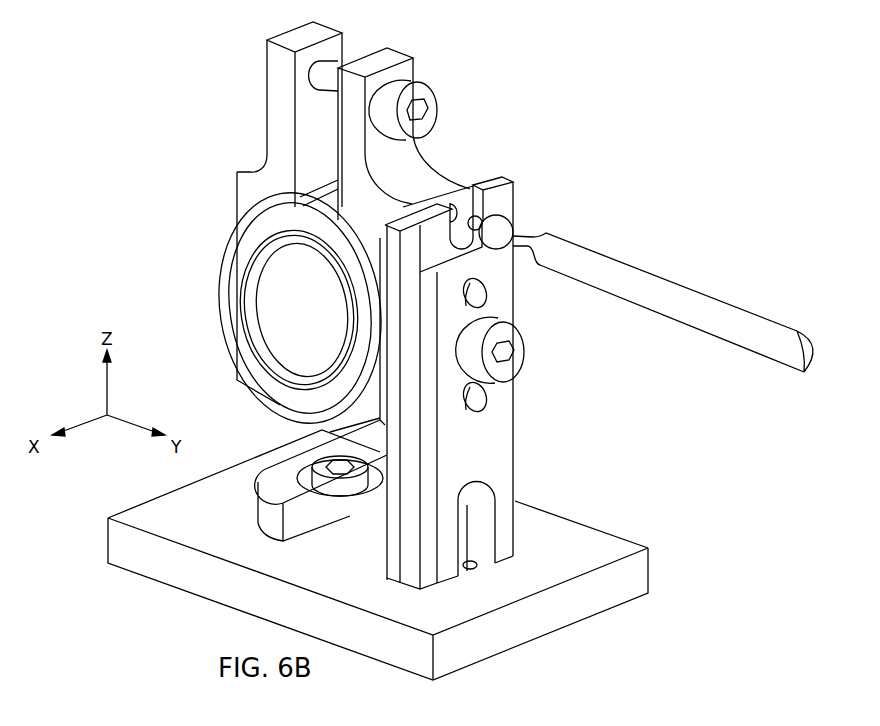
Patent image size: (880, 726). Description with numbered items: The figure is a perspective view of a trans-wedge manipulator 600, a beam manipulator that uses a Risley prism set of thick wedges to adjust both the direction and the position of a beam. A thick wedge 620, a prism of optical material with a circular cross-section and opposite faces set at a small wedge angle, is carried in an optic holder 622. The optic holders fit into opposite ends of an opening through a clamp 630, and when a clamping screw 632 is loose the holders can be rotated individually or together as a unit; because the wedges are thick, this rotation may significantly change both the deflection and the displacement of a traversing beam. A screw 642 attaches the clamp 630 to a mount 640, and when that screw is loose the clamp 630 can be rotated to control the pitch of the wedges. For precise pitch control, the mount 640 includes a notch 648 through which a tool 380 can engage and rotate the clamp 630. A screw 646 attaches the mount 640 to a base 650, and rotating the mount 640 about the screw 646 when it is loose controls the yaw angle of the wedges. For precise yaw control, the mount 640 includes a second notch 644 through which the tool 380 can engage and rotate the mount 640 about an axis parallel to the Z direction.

The trans-wedge manipulator 600 is at (533, 47).
The wedge 620 is at (326, 321).
The optic holder 622 is at (220, 292).
The clamp 630 is at (236, 194).
The clamping screw 632 is at (437, 102).
The mount 640 is at (518, 470).
The screw 642 is at (528, 351).
The notch 644 is at (480, 512).
The screw 646 is at (307, 458).
The notch 648 is at (470, 198).
The base 650 is at (173, 517).
The tool 380 is at (703, 310).